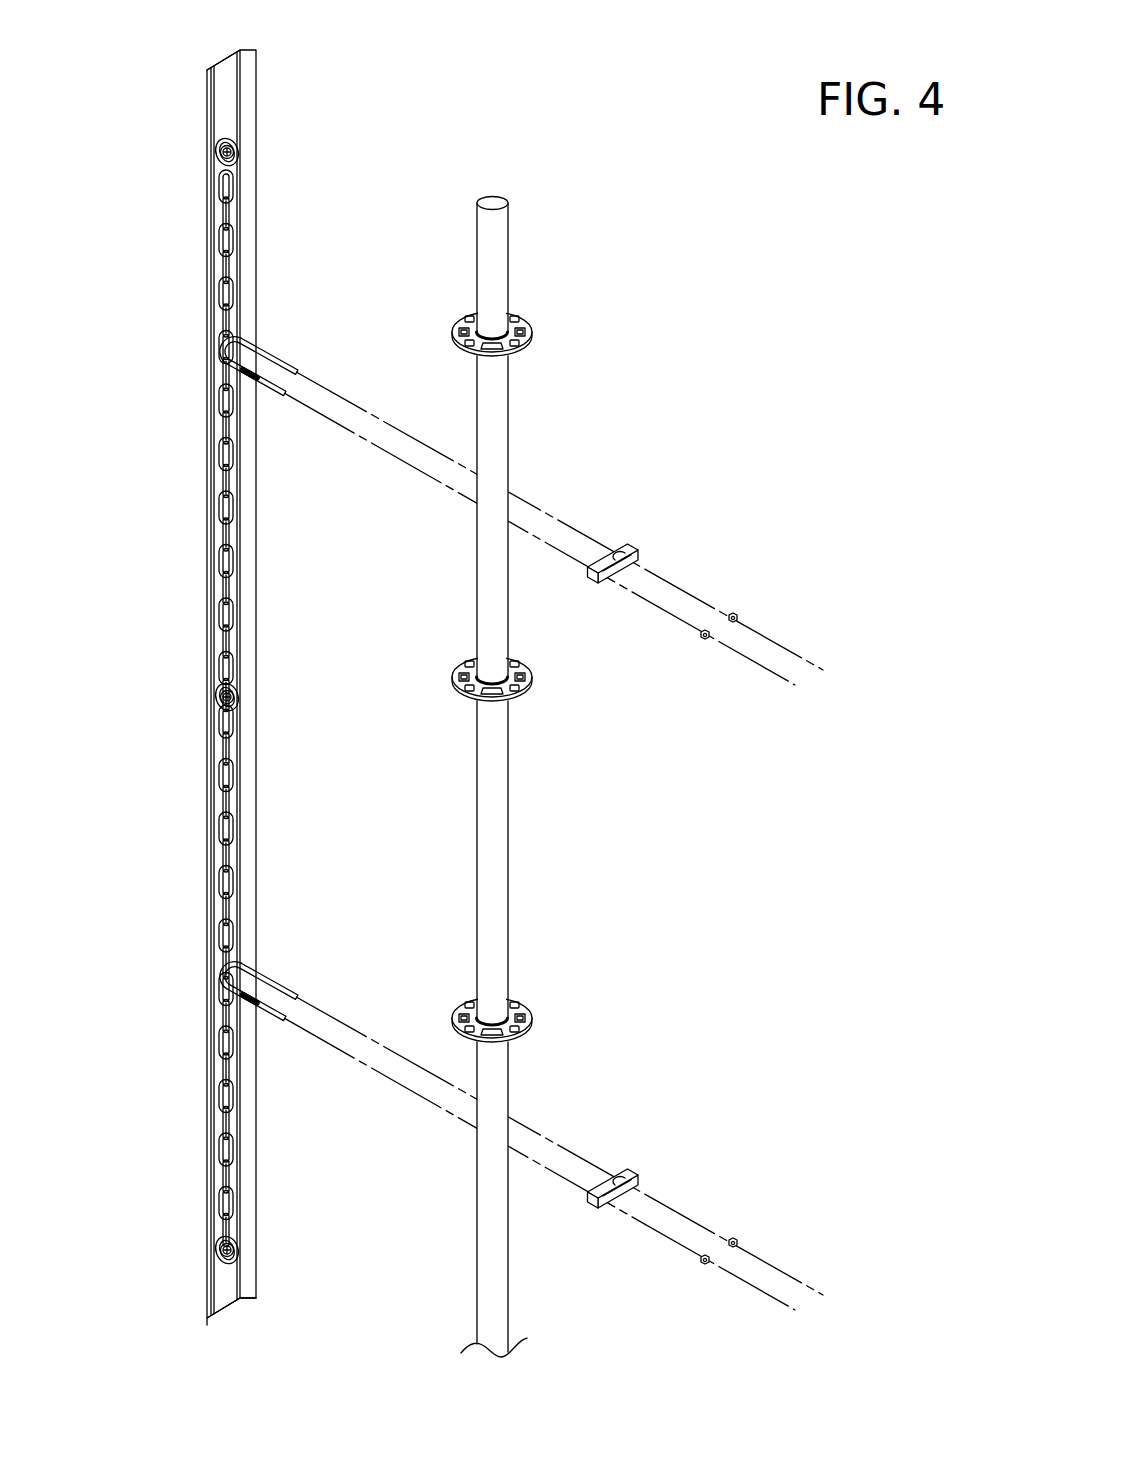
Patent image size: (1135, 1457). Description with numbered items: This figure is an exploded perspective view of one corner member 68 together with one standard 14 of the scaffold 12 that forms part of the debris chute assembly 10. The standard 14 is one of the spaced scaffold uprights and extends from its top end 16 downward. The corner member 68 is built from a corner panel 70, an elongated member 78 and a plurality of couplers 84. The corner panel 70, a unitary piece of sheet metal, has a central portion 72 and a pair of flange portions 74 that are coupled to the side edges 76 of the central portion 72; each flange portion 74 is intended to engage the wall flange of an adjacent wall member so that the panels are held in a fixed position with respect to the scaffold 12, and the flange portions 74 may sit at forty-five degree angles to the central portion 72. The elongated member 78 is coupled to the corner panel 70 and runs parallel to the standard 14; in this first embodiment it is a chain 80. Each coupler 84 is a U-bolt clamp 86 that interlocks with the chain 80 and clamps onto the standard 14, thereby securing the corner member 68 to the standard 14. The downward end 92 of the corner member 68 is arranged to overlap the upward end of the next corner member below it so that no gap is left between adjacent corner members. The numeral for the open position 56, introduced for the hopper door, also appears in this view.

The debris chute assembly 10 is at (570, 702).
The scaffold 12 is at (570, 739).
The standard 14 is at (496, 435).
The top end 16 is at (494, 201).
The open position 56 is at (531, 1099).
The corner member 68 is at (438, 680).
The corner panel 70 is at (208, 677).
The central portion 72 is at (233, 77).
The flange portion 74 is at (253, 83).
The side edge 76 is at (245, 67).
The elongated member 78 is at (255, 605).
The chain 80 is at (218, 536).
The coupler 84 is at (521, 772).
The U-bolt clamp 86 is at (289, 352).
The downward end 92 is at (222, 1308).